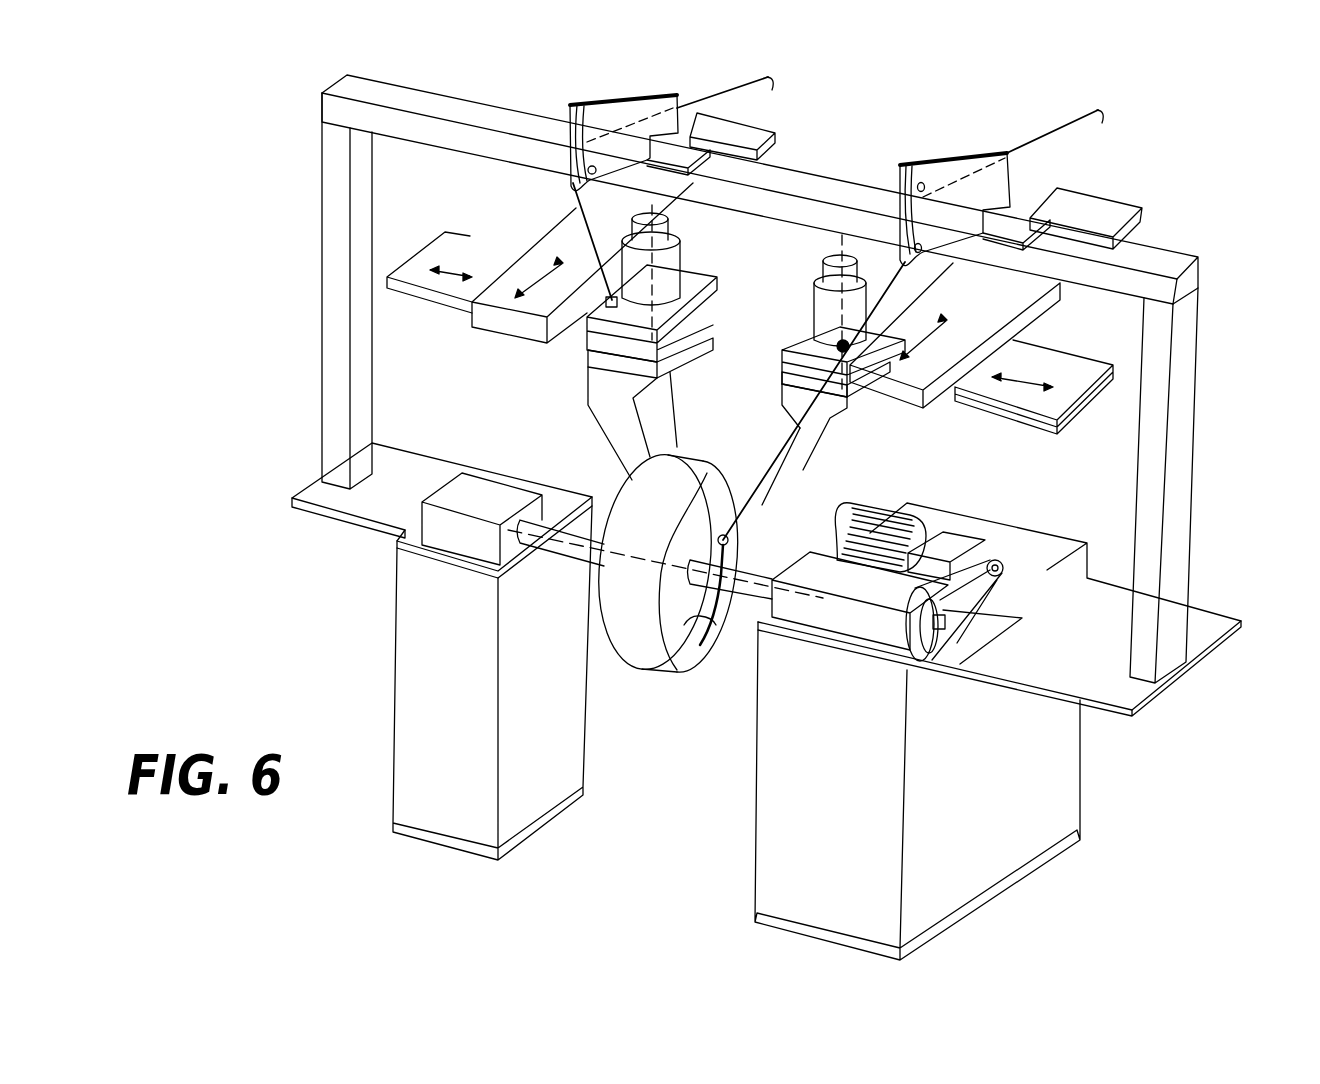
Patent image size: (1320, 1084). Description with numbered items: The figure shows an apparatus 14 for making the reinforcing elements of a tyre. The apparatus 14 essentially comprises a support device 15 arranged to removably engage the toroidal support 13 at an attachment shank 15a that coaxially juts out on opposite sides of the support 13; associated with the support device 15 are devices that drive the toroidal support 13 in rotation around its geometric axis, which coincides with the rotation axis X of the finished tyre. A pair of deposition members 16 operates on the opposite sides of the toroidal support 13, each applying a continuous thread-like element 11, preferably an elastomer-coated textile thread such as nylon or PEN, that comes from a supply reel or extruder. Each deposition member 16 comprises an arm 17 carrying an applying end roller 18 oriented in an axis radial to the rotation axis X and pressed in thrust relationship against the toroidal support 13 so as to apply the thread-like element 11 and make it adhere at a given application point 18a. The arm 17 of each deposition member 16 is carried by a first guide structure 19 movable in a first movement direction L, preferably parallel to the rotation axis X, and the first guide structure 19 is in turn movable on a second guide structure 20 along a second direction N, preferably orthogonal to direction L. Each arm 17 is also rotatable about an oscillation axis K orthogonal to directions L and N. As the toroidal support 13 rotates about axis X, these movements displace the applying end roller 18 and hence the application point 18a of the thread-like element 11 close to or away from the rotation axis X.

The continuous thread-like element 11 is at (767, 78).
The toroidal support 13 is at (633, 615).
The apparatus 14 is at (229, 236).
The support device 15 is at (748, 842).
The attachment shank 15a is at (570, 548).
The deposition member 16 is at (562, 368).
The arm 17 is at (598, 392).
The applying end roller 18 is at (763, 503).
The application point 18a is at (722, 535).
The first guide structure 19 is at (453, 245).
The second guide structure 20 is at (787, 150).
The oscillation axis K is at (683, 263).
The first movement direction L is at (448, 278).
The second direction N is at (520, 290).
The rotation axis X is at (737, 617).